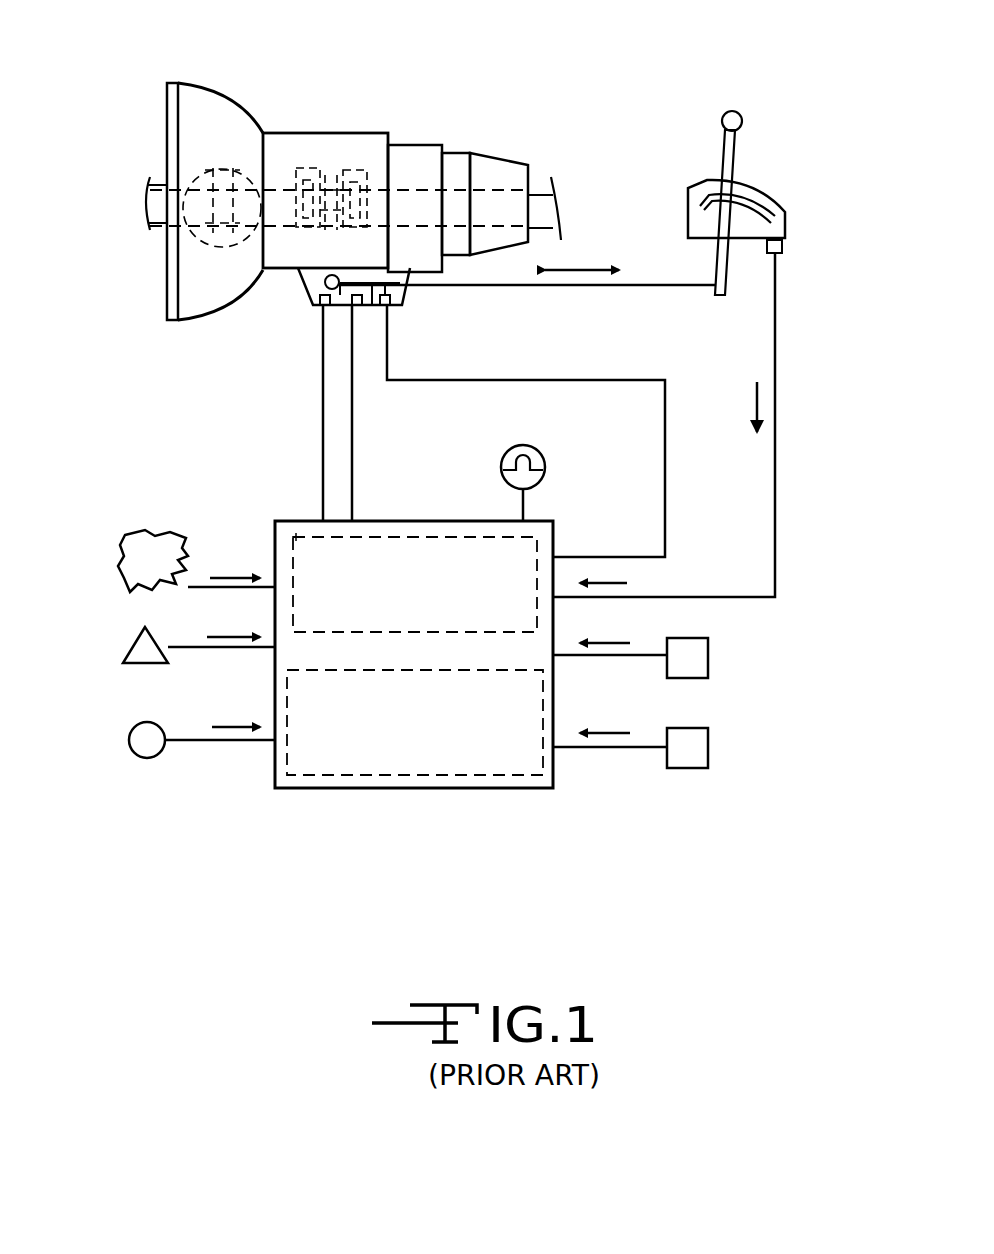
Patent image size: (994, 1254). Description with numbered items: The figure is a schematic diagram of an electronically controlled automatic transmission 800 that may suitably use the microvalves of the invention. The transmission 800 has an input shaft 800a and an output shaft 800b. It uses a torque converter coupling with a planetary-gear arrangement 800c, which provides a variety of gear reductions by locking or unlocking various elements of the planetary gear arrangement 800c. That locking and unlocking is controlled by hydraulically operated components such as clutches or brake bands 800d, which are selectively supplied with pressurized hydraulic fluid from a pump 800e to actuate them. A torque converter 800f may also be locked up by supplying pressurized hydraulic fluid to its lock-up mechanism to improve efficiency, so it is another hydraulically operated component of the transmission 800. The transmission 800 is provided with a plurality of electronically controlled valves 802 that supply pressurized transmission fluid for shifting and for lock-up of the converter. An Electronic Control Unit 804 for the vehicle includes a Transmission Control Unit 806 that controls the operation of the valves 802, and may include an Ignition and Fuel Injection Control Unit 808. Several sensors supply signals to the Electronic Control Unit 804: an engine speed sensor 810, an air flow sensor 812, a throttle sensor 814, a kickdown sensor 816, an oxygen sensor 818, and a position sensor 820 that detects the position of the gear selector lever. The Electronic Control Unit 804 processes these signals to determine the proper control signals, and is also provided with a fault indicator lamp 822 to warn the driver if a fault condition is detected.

The electronically controlled automatic transmission 800 is at (413, 74).
The input shaft 800a is at (155, 224).
The output shaft 800b is at (533, 192).
The planetary-gear arrangement 800c is at (310, 277).
The clutches or brake bands 800d is at (352, 170).
The pump 800e is at (357, 268).
The torque converter 800f is at (206, 165).
The electronically controlled valves 802 is at (350, 306).
The Electronic Control Unit 804 is at (377, 521).
The Transmission Control Unit 806 is at (297, 525).
The Ignition and Fuel Injection Control Unit 808 is at (318, 765).
The engine speed sensor 810 is at (187, 587).
The air flow sensor 812 is at (137, 638).
The throttle sensor 814 is at (143, 742).
The kickdown sensor 816 is at (708, 755).
The oxygen sensor 818 is at (708, 653).
The position sensor 820 is at (782, 245).
The fault indicator lamp 822 is at (532, 446).